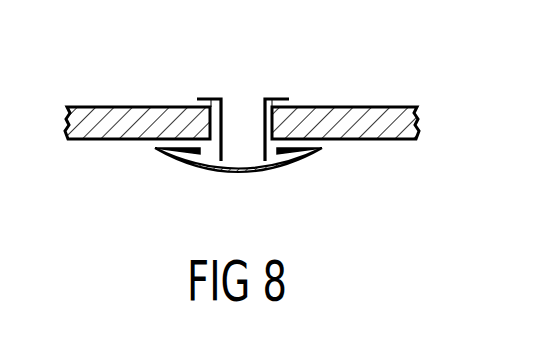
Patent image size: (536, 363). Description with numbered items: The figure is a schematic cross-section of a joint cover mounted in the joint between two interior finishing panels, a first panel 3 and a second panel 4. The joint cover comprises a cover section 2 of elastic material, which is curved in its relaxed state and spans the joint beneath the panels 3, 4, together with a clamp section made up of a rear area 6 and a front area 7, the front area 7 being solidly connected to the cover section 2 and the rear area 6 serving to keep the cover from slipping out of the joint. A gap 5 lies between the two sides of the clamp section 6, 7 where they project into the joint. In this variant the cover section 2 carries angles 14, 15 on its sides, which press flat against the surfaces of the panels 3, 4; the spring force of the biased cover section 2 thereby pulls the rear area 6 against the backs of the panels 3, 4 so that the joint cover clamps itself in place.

The cover section 2 is at (240, 176).
The first panel 3 is at (103, 107).
The second panel 4 is at (381, 107).
The gap between flanges 5 is at (240, 112).
The rear area 6 is at (204, 99).
The front area 7 is at (218, 98).
The angle 14 is at (176, 162).
The angle 15 is at (300, 162).